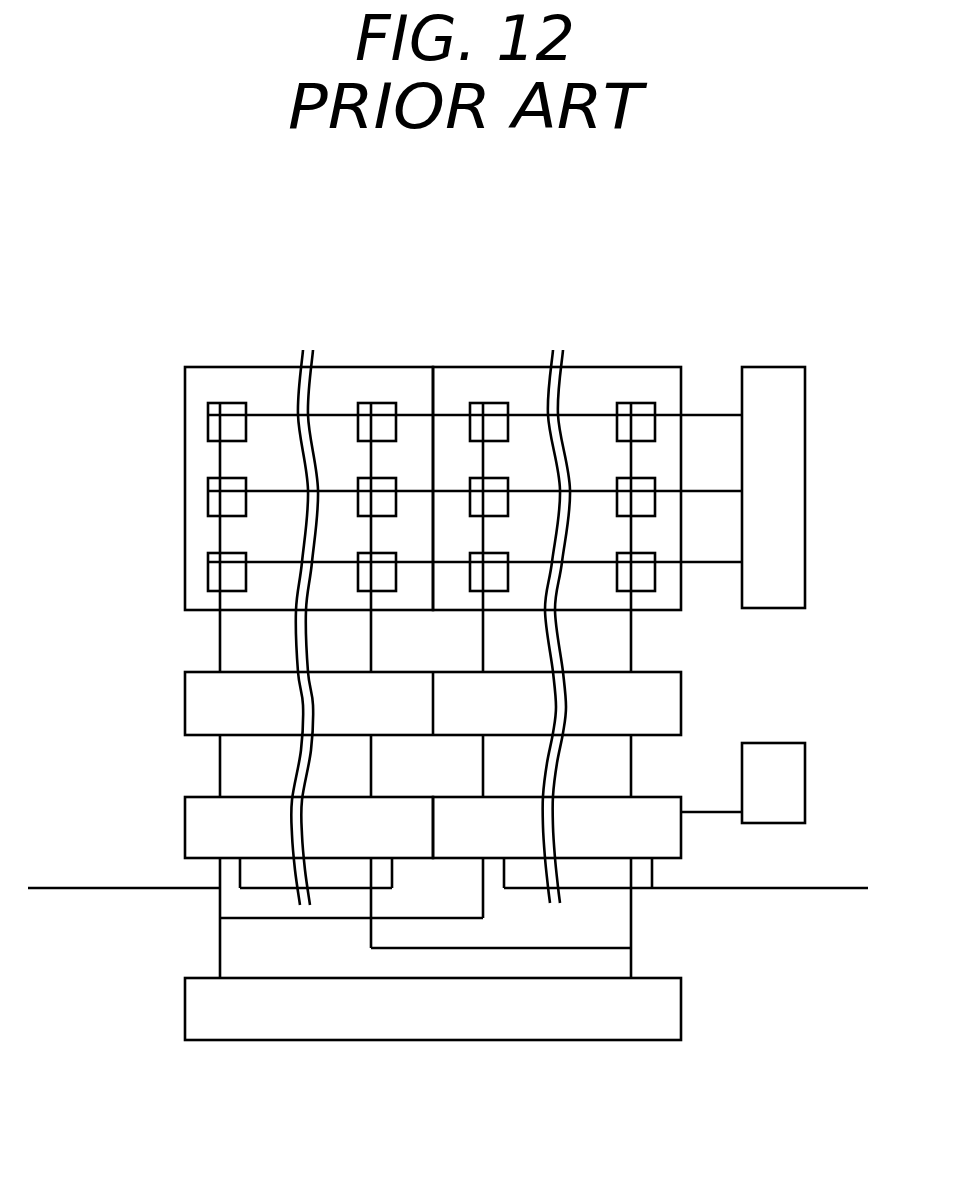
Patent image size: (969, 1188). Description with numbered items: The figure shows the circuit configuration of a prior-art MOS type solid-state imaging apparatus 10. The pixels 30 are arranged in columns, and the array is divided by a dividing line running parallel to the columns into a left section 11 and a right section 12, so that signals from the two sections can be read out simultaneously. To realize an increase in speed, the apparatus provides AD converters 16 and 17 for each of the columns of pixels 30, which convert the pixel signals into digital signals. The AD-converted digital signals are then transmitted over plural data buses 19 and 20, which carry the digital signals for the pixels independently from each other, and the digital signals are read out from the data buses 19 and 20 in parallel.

The MOS type solid-state imaging apparatus 10 is at (448, 597).
The left section 11 is at (382, 366).
The right section 12 is at (488, 366).
The pixels 30 is at (208, 406).
The AD converter 16 is at (185, 822).
The AD converter 17 is at (681, 832).
The data bus 19 is at (80, 888).
The data bus 20 is at (792, 888).